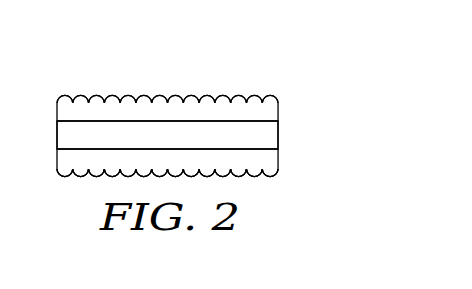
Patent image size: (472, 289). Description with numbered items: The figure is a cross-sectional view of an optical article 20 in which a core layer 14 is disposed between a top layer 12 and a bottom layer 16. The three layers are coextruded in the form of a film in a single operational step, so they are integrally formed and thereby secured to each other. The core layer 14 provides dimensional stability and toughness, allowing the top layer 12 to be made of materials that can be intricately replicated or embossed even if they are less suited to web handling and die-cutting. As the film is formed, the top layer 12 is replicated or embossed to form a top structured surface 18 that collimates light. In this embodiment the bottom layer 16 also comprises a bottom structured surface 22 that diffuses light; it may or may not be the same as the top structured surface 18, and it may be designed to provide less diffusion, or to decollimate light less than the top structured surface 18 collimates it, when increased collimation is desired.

The top layer 12 is at (273, 107).
The core layer 14 is at (273, 135).
The bottom layer 16 is at (273, 165).
The top structured surface 18 is at (270, 82).
The optical article 20 is at (220, 50).
The bottom structured surface 22 is at (272, 186).